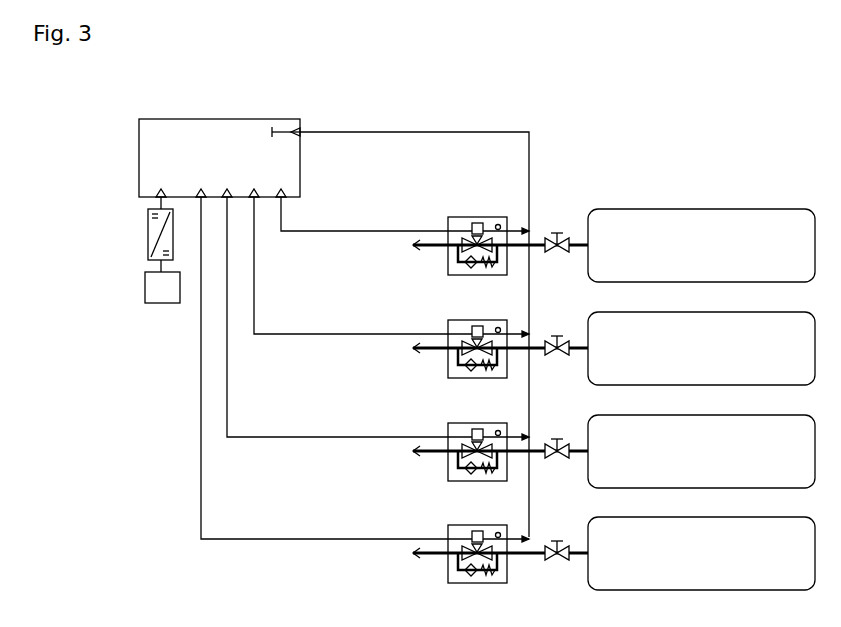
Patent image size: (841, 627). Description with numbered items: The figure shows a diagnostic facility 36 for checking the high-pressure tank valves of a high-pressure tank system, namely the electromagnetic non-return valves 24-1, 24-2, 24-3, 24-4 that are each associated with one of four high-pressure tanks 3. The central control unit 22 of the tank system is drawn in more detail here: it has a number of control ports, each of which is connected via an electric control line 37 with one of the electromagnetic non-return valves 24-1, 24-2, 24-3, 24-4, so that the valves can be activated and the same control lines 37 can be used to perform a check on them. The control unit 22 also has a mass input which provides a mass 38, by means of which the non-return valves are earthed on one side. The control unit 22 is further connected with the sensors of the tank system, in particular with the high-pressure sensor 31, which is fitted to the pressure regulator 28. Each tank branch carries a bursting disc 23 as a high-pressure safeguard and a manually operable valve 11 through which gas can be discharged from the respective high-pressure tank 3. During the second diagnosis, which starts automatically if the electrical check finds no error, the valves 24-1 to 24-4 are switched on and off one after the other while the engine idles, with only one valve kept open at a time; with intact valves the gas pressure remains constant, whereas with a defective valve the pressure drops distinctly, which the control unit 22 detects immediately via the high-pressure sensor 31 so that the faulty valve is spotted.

The diagnostic facility 36 is at (607, 92).
The control unit 22 is at (219, 158).
The mass 38 is at (287, 120).
The high-pressure sensor 31 is at (146, 228).
The pressure regulator 28 is at (148, 281).
The electric control line 37 is at (365, 369).
The bursting disc 23 is at (502, 379).
The electromagnetic non-return valve 24-1 is at (477, 234).
The electromagnetic non-return valve 24-2 is at (477, 337).
The electromagnetic non-return valve 24-3 is at (477, 440).
The electromagnetic non-return valve 24-4 is at (477, 542).
The manually operable valve 11 is at (557, 384).
The high-pressure tank 3 is at (701, 399).